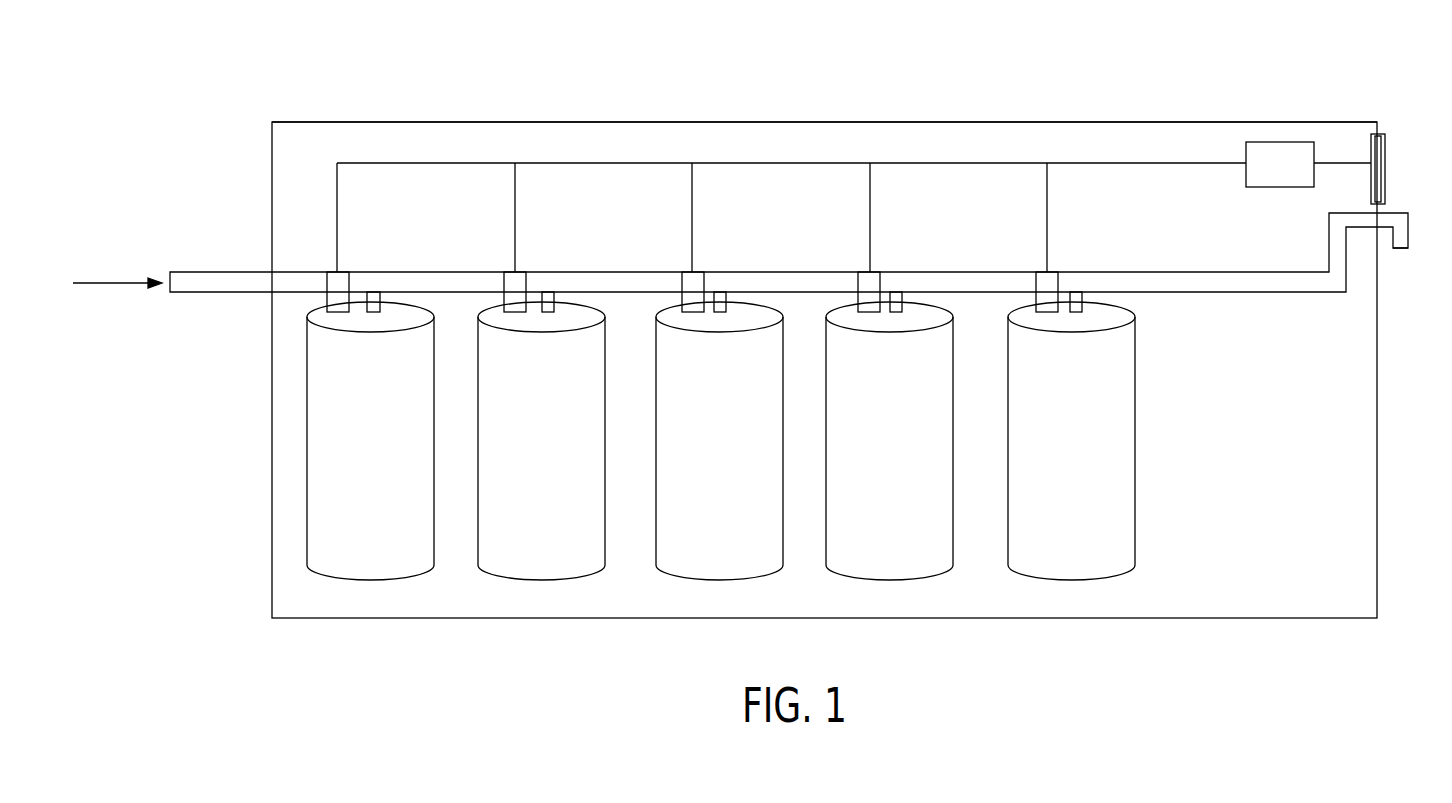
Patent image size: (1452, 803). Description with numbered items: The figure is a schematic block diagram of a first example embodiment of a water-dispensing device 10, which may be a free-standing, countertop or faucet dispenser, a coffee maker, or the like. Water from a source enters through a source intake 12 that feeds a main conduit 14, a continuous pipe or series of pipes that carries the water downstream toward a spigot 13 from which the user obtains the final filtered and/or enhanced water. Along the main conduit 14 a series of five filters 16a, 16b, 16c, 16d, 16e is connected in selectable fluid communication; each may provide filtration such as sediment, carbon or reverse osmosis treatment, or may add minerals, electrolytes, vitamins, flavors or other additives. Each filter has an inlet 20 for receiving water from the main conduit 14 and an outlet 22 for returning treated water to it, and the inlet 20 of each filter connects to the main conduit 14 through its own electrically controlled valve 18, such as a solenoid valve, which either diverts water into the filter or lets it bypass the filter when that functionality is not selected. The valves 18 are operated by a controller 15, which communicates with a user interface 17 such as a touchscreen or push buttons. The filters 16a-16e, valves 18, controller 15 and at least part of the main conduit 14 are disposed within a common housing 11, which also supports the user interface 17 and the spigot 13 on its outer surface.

The water-dispensing device 10 is at (1072, 100).
The housing 11 is at (608, 121).
The source intake 12 is at (168, 272).
The spigot 13 is at (1406, 250).
The main conduit 14 is at (237, 272).
The controller 15 is at (1292, 179).
The filter 16a is at (387, 487).
The filter 16b is at (558, 487).
The filter 16c is at (733, 487).
The filter 16d is at (906, 487).
The filter 16e is at (1087, 487).
The user interface 17 is at (1386, 163).
The electrically controlled valve 18 is at (330, 272).
The inlet 20 is at (512, 296).
The outlet 22 is at (547, 296).